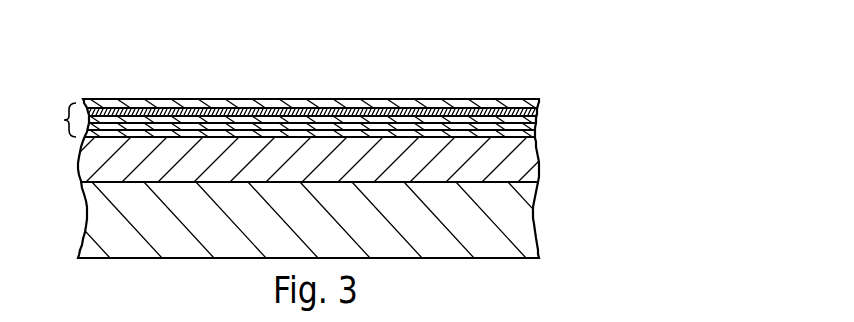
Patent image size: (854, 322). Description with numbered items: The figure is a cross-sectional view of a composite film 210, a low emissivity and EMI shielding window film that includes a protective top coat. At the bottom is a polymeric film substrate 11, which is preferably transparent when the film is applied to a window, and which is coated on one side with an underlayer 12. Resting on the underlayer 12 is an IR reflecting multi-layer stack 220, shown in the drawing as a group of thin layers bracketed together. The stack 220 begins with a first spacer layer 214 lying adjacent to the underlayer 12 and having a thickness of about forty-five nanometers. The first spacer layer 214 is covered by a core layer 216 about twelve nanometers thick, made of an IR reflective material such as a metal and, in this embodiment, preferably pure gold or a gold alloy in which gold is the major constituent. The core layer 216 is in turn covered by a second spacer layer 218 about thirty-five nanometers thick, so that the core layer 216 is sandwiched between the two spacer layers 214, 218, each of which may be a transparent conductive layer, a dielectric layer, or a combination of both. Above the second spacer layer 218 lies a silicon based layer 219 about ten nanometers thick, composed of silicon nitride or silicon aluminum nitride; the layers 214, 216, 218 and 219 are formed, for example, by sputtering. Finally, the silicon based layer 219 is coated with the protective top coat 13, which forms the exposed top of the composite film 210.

The polymeric film substrate 11 is at (512, 243).
The underlayer 12 is at (522, 174).
The protective top coat 13 is at (481, 104).
The composite film 210 is at (664, 78).
The first spacer layer 214 is at (537, 132).
The core layer 216 is at (536, 124).
The second spacer layer 218 is at (538, 113).
The silicon based layer 219 is at (539, 110).
The IR reflecting multi-layer stack 220 is at (293, 120).